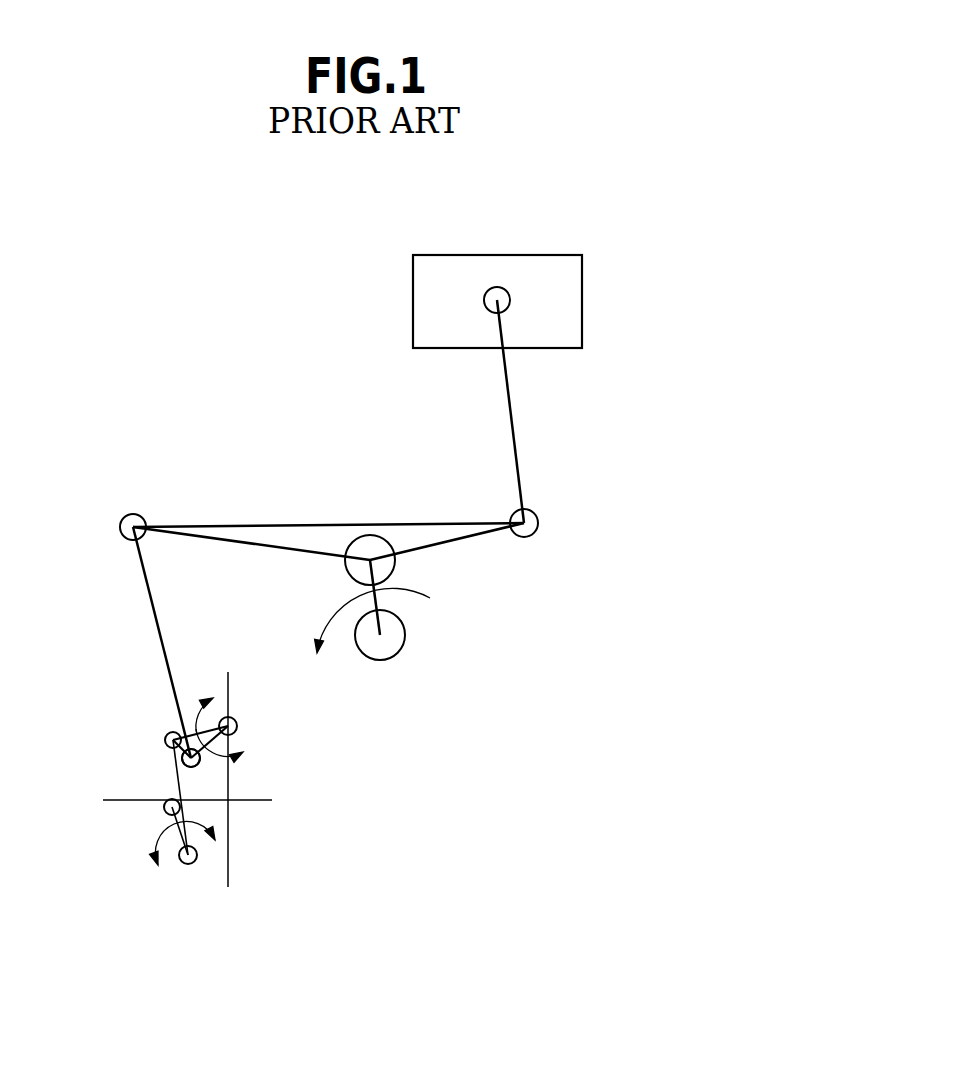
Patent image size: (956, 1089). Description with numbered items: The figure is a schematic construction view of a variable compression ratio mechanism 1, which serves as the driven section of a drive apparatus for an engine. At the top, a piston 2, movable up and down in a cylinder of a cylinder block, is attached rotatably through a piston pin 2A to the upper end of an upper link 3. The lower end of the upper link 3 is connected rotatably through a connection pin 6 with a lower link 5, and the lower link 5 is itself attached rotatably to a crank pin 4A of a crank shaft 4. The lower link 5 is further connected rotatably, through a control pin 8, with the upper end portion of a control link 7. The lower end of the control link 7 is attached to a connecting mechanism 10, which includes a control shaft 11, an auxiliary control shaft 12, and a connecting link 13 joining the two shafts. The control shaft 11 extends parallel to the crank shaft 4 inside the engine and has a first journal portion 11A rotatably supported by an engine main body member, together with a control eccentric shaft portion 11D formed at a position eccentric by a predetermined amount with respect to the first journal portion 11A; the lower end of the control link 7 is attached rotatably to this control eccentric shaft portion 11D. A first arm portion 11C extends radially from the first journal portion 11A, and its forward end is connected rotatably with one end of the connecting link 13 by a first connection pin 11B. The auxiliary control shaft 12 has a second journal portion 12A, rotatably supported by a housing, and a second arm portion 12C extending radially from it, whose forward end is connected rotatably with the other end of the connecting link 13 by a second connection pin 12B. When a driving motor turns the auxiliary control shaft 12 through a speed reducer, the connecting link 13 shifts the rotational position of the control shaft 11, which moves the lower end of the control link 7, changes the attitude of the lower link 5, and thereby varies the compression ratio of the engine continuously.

The variable compression ratio mechanism 1 is at (602, 479).
The piston 2 is at (560, 272).
The piston pin 2A is at (503, 289).
The upper link 3 is at (512, 412).
The crank shaft 4 is at (398, 663).
The crank pin 4A is at (373, 546).
The lower link 5 is at (452, 542).
The connection pin 6 is at (535, 537).
The control link 7 is at (150, 608).
The control pin 8 is at (133, 514).
The connecting mechanism 10 is at (260, 843).
The control shaft 11 is at (251, 732).
The first journal portion 11A is at (233, 718).
The first connection pin 11B is at (170, 733).
The first arm portion 11C is at (193, 730).
The control eccentric shaft portion 11D is at (195, 768).
The auxiliary control shaft 12 is at (175, 848).
The second journal portion 12A is at (163, 810).
The second connection pin 12B is at (197, 862).
The second arm portion 12C is at (170, 823).
The connecting link 13 is at (182, 760).